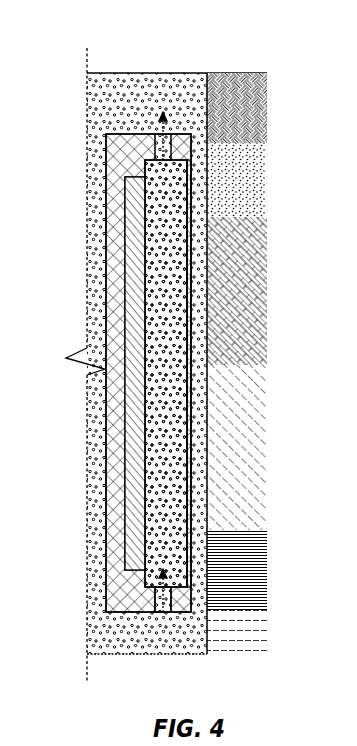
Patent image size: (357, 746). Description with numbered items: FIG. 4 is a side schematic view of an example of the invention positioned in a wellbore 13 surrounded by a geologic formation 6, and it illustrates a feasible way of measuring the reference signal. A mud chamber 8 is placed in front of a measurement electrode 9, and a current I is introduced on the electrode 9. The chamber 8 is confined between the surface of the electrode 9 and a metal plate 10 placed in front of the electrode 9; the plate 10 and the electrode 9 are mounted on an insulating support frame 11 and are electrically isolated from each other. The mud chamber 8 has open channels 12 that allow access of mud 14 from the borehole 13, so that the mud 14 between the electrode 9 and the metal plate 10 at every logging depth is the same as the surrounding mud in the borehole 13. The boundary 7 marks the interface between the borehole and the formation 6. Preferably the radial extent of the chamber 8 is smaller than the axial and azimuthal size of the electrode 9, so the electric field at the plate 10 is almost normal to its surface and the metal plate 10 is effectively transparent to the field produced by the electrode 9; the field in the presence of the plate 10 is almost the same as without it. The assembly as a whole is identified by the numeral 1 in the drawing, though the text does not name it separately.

The device 1 is at (122, 277).
The geologic formation 6 is at (257, 57).
The wall surface 7 is at (207, 73).
The mud chamber 8 is at (172, 305).
The measurement electrode 9 is at (125, 438).
The metal plate 10 is at (185, 468).
The insulating support frame 11 is at (113, 165).
The open channels 12 is at (167, 600).
The wellbore 13 is at (117, 55).
The mud 14 is at (175, 413).